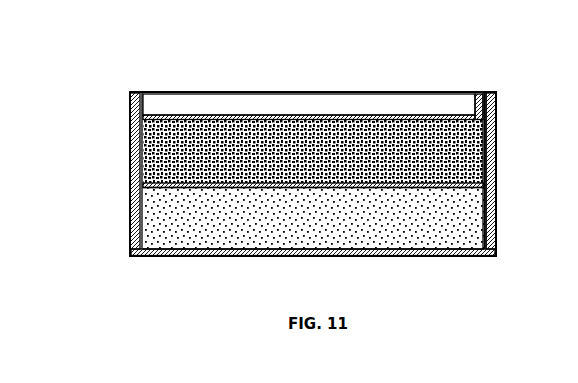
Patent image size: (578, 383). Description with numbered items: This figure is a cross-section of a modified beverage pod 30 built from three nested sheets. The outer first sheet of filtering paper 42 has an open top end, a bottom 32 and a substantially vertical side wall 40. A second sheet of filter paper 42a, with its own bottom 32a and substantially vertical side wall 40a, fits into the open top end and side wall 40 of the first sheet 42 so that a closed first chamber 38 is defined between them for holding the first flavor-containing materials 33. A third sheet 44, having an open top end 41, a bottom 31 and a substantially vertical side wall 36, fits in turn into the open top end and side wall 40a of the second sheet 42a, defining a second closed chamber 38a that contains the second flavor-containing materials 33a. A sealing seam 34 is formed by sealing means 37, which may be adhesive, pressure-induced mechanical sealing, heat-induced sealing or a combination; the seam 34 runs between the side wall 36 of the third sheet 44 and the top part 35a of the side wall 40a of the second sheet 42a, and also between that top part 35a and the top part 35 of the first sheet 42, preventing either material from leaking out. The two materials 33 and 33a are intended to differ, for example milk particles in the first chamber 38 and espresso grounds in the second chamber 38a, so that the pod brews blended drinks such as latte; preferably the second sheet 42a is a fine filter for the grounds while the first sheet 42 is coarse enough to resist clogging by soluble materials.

The beverage pod 30 is at (119, 83).
The bottom of third sheet 31 is at (207, 114).
The bottom of first sheet 32 is at (337, 257).
The bottom of second sheet 32a is at (165, 190).
The first flavor-containing materials 33 is at (378, 232).
The second flavor-containing materials 33a is at (215, 190).
The sealing seam 34 is at (507, 109).
The top part of first sheet 35 is at (498, 100).
The top part of side wall of second sheet 35a is at (485, 92).
The side wall of third sheet 36 is at (476, 100).
The sealing means 37 is at (477, 93).
The first chamber 38 is at (152, 240).
The second chamber 38a is at (130, 169).
The side wall of first sheet 40 is at (130, 216).
The side wall of second sheet 40a is at (130, 133).
The open top end of third sheet 41 is at (255, 102).
The first sheet of filtering paper 42 is at (437, 262).
The second sheet of filter paper 42a is at (262, 198).
The third sheet 44 is at (372, 107).